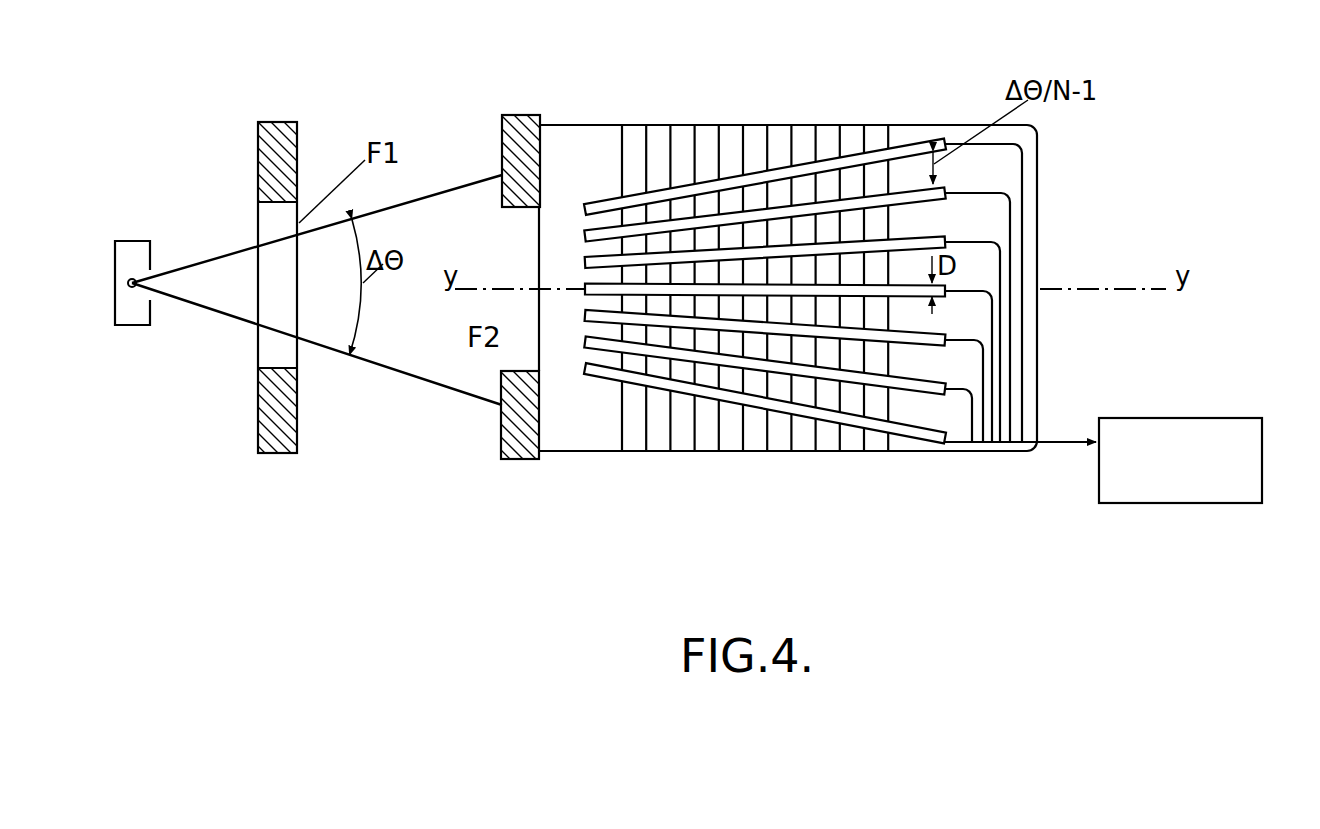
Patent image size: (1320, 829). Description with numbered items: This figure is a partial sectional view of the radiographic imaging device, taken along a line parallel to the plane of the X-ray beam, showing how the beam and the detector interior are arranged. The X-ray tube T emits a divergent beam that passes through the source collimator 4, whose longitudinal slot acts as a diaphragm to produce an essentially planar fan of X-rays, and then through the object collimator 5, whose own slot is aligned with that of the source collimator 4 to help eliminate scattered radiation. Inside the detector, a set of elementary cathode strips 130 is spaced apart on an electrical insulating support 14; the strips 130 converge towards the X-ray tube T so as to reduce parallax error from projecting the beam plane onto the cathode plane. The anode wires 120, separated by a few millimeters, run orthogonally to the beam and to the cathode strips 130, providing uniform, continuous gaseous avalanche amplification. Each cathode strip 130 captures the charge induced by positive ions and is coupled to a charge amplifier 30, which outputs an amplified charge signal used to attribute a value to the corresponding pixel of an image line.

The X-ray tube T is at (152, 267).
The source collimator 4 is at (275, 437).
The object collimator 5 is at (520, 135).
The electrical insulating support 14 is at (590, 428).
The anode wires 120 is at (792, 433).
The cathode strips 130 is at (800, 167).
The charge amplifier 30 is at (1198, 418).